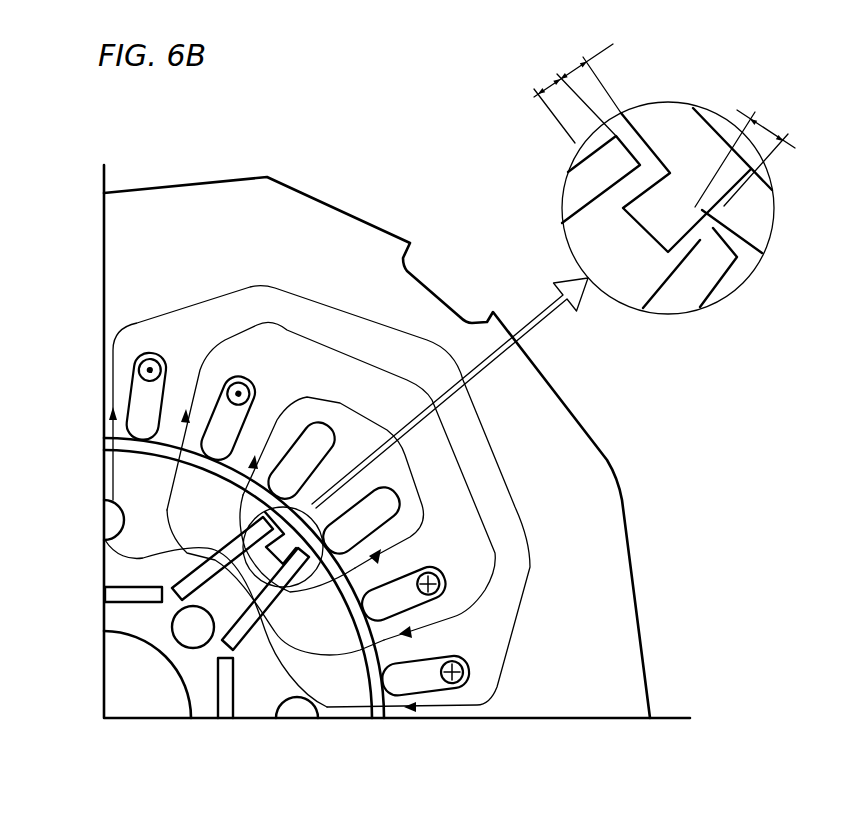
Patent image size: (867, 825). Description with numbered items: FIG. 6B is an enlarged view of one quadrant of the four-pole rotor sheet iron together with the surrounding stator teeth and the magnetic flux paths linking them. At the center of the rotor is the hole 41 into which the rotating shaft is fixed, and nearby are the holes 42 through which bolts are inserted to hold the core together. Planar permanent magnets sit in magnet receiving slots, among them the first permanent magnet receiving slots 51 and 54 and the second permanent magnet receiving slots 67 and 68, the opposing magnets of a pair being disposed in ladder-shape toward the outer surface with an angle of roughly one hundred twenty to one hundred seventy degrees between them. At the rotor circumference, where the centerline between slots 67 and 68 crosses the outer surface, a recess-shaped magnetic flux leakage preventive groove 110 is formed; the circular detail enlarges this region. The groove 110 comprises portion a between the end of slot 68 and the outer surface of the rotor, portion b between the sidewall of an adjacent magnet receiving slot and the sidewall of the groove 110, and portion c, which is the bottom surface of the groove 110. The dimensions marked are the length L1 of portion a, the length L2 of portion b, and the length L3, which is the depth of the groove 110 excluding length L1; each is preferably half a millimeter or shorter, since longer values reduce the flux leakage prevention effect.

The hole 41 is at (125, 692).
The holes 42 is at (112, 520).
The first permanent magnet receiving slot 51 is at (132, 592).
The first permanent magnet receiving slot 54 is at (233, 685).
The second permanent magnet receiving slot 67 is at (280, 572).
The second permanent magnet receiving slot 68 is at (143, 558).
The magnetic flux leakage preventive groove 110 is at (668, 210).
The portion a is at (633, 143).
The portion b is at (689, 228).
The portion c is at (640, 183).
The length L1 is at (577, 77).
The length L2 is at (745, 143).
The length L3 is at (546, 101).